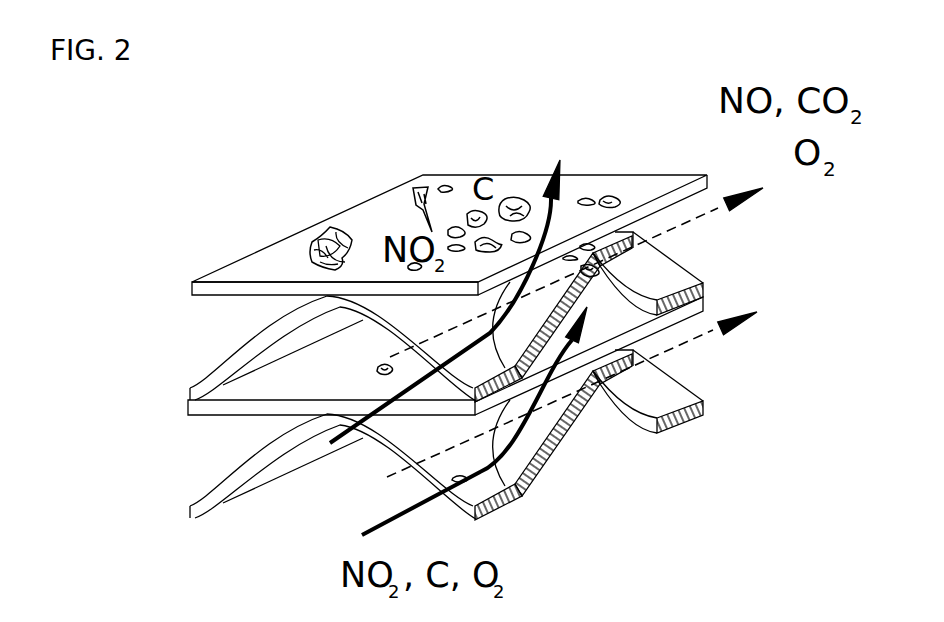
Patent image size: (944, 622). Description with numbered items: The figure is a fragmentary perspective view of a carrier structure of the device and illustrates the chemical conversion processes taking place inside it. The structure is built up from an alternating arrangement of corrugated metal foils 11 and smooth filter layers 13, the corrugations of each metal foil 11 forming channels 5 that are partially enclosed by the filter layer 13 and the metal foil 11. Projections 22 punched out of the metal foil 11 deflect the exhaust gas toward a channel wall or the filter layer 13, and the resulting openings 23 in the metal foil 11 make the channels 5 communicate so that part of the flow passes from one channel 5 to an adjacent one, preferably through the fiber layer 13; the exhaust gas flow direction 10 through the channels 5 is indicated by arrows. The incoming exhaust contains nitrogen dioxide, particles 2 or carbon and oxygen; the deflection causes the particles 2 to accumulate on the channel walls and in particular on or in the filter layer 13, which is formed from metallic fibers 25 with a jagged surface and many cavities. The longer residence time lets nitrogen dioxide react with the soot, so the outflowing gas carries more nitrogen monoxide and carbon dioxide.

The particles 2 is at (600, 195).
The channels 5 is at (245, 392).
The flow channel / exhaust gas flow direction 10 is at (702, 337).
The corrugated metal foil 11 is at (703, 415).
The filter layer 13 is at (262, 265).
The projections 22 is at (548, 450).
The openings 23 is at (588, 423).
The metallic fibers 25 is at (343, 230).